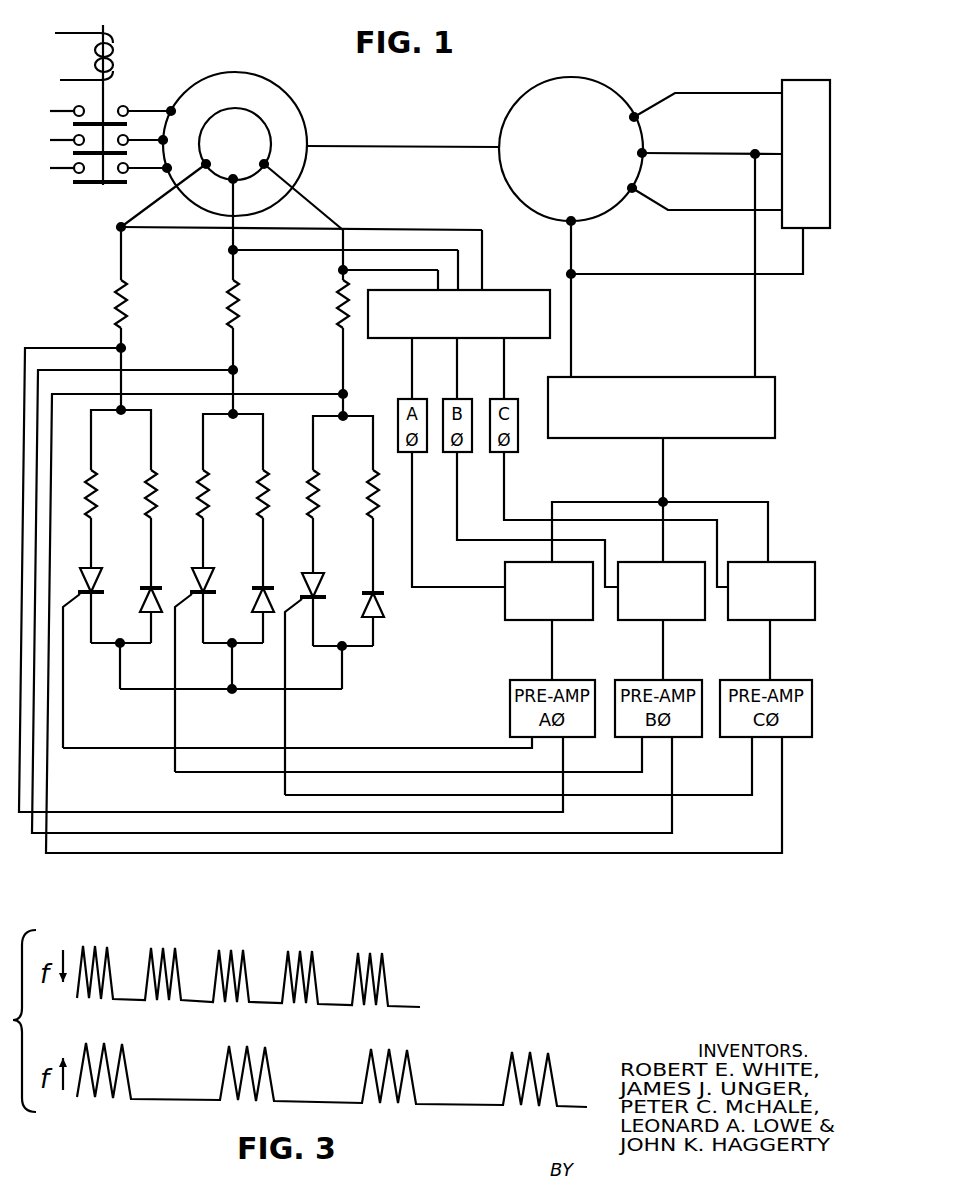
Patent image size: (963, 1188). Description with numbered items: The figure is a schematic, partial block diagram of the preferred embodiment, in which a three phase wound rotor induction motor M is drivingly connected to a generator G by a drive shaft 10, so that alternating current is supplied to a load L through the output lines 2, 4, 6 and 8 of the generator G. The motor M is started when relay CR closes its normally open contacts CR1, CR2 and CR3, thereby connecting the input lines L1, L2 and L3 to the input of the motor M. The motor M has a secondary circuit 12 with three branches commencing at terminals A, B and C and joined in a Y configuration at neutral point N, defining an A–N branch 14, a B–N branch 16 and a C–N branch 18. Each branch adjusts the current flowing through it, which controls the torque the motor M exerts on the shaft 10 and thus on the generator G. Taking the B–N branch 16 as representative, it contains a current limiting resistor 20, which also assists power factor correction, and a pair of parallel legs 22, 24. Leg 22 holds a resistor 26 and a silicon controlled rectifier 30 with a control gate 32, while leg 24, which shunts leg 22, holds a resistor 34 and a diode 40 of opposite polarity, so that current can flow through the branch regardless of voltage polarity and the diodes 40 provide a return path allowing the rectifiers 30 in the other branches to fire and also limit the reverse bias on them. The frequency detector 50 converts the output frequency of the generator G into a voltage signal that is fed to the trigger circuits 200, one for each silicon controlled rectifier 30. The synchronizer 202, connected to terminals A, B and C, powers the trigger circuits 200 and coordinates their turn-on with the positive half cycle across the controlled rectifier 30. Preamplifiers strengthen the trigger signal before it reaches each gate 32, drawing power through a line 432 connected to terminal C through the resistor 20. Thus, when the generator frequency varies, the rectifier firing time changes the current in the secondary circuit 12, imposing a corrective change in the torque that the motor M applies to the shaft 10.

The output line 2 is at (693, 92).
The output line 4 is at (684, 152).
The output line 6 is at (682, 209).
The output line 8 is at (573, 270).
The drive shaft 10 is at (412, 146).
The secondary circuit 12 is at (195, 297).
The A–N branch 14 is at (121, 579).
The B–N branch 16 is at (196, 466).
The C–N branch 18 is at (308, 466).
The current limiting resistor 20 is at (127, 320).
The leg 22 is at (89, 538).
The leg 24 is at (149, 540).
The resistor 26 is at (96, 508).
The silicon controlled rectifier 30 is at (100, 586).
The control gate 32 is at (70, 598).
The resistor 34 is at (158, 504).
The diode 40 is at (136, 606).
The frequency detector 50 is at (648, 374).
The trigger circuit 200 is at (538, 560).
The synchronizer 202 is at (490, 285).
The line 432 is at (132, 832).
The wound rotor induction motor M is at (224, 72).
The generator G is at (580, 78).
The load L is at (805, 70).
The neutral point N is at (234, 690).
The terminal A is at (119, 228).
The terminal B is at (231, 250).
The terminal C is at (341, 272).
The relay CR is at (83, 105).
The contact CR1 is at (106, 118).
The contact CR2 is at (112, 148).
The contact CR3 is at (105, 190).
The input line L1 is at (54, 112).
The input line L2 is at (54, 141).
The input line L3 is at (54, 169).